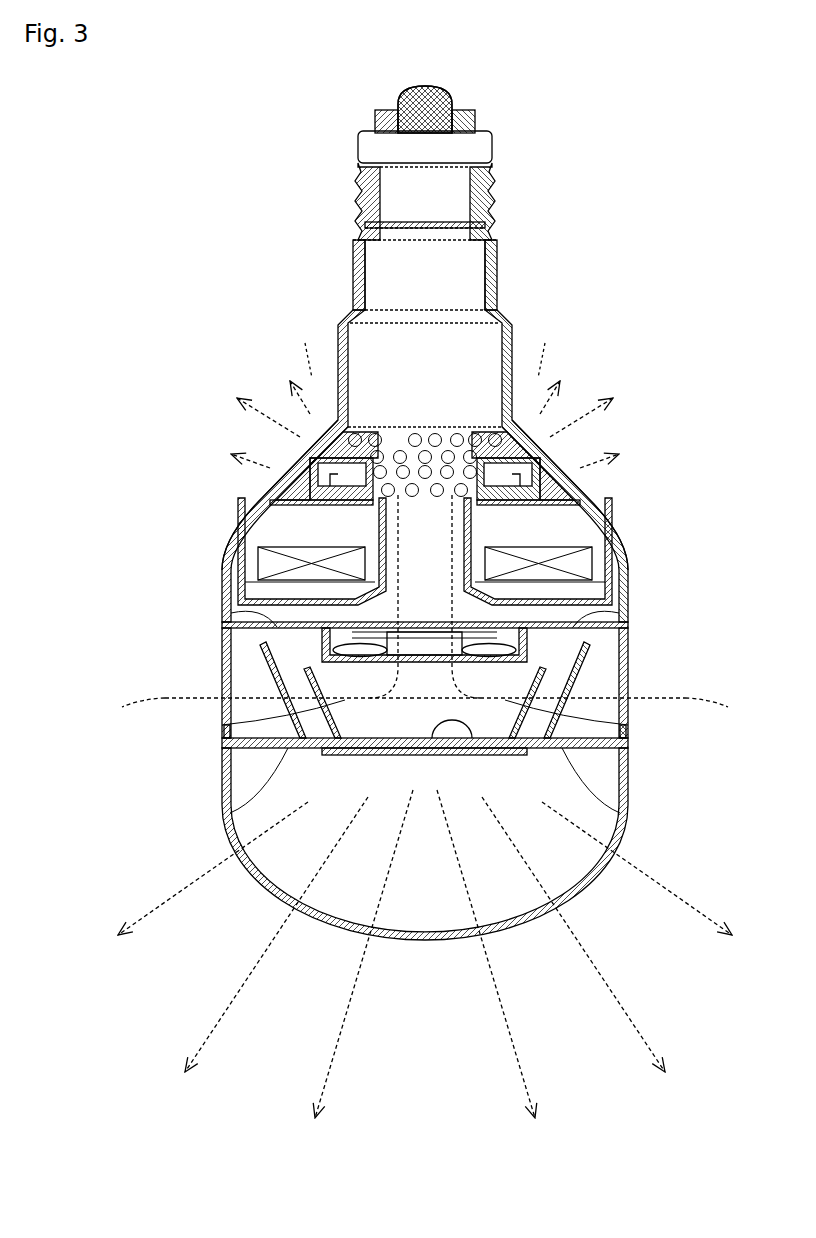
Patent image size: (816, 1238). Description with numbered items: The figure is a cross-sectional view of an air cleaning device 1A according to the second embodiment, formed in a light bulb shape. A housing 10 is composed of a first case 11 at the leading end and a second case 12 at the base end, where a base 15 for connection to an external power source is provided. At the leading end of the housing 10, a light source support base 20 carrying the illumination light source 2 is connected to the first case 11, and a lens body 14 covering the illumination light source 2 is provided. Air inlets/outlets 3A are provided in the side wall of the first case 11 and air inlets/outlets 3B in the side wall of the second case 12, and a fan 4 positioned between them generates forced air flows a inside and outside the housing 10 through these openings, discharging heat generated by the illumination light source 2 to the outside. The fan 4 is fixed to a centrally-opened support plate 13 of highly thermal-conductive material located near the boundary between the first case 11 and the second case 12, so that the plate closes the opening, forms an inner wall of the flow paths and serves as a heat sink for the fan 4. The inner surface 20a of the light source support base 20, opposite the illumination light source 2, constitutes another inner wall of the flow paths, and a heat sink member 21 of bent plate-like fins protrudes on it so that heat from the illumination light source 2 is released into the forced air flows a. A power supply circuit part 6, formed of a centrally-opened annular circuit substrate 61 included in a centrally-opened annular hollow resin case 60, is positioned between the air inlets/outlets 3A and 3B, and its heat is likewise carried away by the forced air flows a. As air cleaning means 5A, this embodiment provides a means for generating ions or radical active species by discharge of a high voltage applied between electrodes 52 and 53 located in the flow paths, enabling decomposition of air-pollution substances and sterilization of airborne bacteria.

The air cleaning device 1A is at (602, 290).
The base 15 is at (358, 152).
The housing 10 is at (634, 588).
The second case 12 is at (612, 525).
The first case 11 is at (632, 662).
The support plate 13 is at (537, 624).
The air inlets/outlets 3A is at (222, 690).
The air inlets/outlets 3B is at (399, 452).
The forced air flows a is at (425, 519).
The electrode 53 is at (305, 450).
The air cleaning means 5A is at (306, 490).
The power supply circuit part 6 is at (181, 478).
The hollow resin case 60 is at (266, 504).
The circuit substrate 61 is at (250, 578).
The electrode 52 is at (356, 506).
The fan 4 is at (410, 650).
The heat sink member 21 is at (231, 614).
The light source support base 20 is at (232, 812).
The inner surface 20a is at (455, 750).
The illumination light source 2 is at (478, 757).
The lens body 14 is at (255, 888).